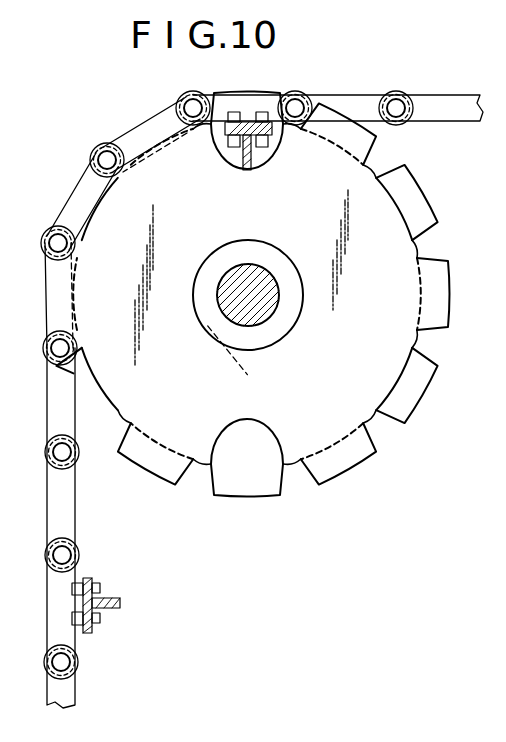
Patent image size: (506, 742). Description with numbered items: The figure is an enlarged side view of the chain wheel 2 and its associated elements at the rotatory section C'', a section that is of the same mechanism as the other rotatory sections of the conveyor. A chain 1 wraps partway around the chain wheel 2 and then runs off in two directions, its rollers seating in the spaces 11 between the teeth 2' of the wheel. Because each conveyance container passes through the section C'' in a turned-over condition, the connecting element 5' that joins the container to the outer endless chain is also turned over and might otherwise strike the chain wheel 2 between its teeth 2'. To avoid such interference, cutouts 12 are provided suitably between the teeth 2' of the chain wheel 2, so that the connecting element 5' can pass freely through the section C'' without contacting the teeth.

The chain 1 is at (362, 93).
The chain wheel 2 is at (269, 294).
The sprocket tooth 2' is at (417, 387).
The connecting element 5' is at (187, 372).
The roller seat 11 is at (200, 127).
The cutouts 12 is at (252, 168).
The rotatory section C'' is at (345, 467).